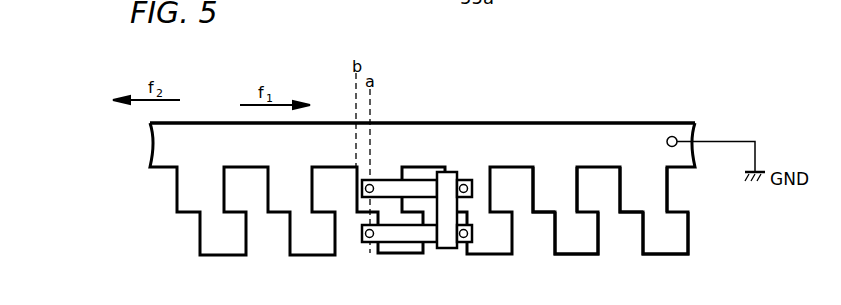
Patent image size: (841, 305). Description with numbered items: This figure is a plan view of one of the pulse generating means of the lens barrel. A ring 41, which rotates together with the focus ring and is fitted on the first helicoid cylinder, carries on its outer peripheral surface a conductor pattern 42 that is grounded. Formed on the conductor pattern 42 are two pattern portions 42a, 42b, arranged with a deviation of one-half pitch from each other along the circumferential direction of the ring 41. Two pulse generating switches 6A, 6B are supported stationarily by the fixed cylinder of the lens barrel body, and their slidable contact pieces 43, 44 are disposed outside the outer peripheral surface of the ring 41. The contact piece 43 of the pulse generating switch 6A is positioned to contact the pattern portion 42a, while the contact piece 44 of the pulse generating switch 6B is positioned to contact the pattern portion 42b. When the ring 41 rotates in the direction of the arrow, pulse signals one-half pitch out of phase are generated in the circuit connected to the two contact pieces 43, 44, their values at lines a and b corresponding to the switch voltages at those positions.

The ring 41 is at (555, 122).
The conductor pattern 42 is at (633, 135).
The pattern portion 42a is at (578, 240).
The pattern portion 42b is at (552, 190).
The slidable contact piece 43 is at (400, 236).
The slidable contact piece 44 is at (390, 180).
The pulse generating switch 6A is at (466, 243).
The pulse generating switch 6B is at (465, 180).